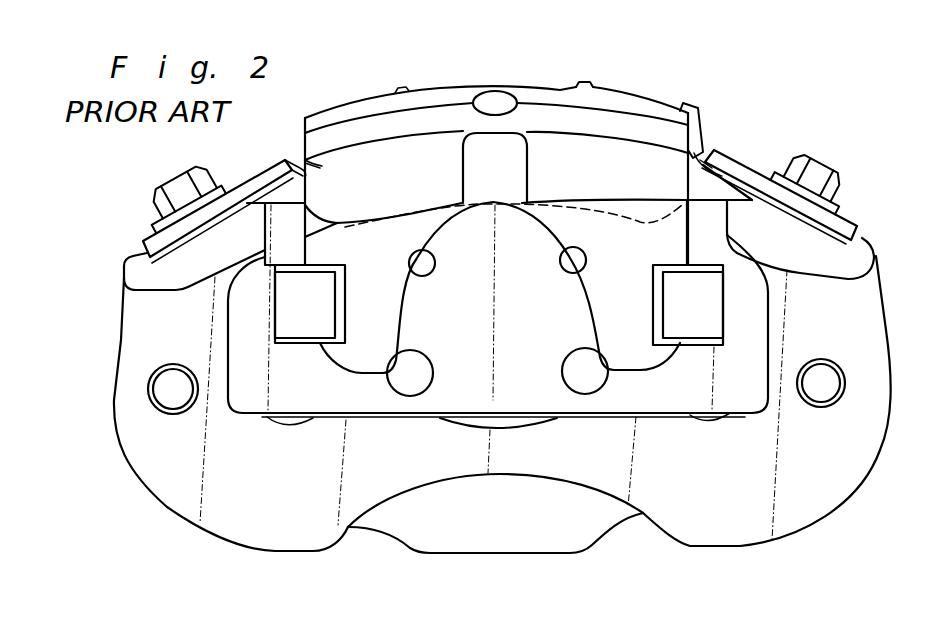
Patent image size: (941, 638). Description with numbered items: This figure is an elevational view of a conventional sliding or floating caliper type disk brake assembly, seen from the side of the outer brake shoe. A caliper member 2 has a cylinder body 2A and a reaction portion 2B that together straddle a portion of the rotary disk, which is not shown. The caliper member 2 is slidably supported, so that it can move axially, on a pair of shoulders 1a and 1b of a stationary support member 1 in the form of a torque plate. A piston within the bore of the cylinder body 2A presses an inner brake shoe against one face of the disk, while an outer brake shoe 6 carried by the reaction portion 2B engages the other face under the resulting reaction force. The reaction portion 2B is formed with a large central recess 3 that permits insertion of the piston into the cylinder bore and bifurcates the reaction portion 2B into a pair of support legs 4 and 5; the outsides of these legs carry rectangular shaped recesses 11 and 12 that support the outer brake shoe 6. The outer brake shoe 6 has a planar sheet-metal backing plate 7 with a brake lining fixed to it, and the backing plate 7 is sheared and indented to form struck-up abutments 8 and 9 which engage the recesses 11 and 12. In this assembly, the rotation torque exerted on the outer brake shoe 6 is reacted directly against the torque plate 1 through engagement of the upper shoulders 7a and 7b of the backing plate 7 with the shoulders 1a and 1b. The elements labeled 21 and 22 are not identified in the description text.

The stationary support member 1 is at (684, 508).
The shoulder 1a is at (168, 280).
The shoulder 1b is at (836, 268).
The caliper member 2 is at (625, 95).
The cylinder body 2A is at (578, 85).
The reaction portion 2B is at (305, 163).
The central recess 3 is at (560, 238).
The support leg 4 is at (387, 314).
The support leg 5 is at (602, 278).
The outer brake shoe 6 is at (438, 418).
The backing plate 7 is at (565, 403).
The upper shoulder 7a is at (278, 223).
The upper shoulder 7b is at (715, 221).
The struck-up abutment 8 is at (287, 310).
The struck-up abutment 9 is at (711, 315).
The rectangular shaped recess 11 is at (333, 300).
The rectangular shaped recess 12 is at (660, 288).
The retaining plate 21 is at (843, 232).
The mounting bolt 22 is at (818, 180).